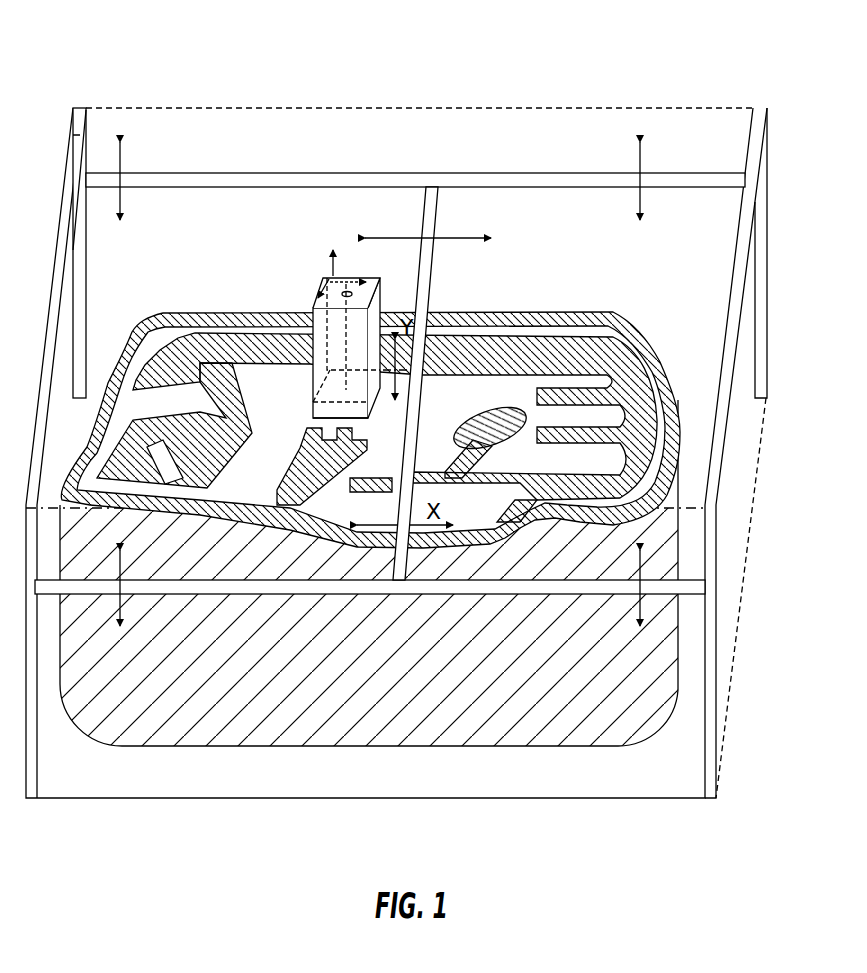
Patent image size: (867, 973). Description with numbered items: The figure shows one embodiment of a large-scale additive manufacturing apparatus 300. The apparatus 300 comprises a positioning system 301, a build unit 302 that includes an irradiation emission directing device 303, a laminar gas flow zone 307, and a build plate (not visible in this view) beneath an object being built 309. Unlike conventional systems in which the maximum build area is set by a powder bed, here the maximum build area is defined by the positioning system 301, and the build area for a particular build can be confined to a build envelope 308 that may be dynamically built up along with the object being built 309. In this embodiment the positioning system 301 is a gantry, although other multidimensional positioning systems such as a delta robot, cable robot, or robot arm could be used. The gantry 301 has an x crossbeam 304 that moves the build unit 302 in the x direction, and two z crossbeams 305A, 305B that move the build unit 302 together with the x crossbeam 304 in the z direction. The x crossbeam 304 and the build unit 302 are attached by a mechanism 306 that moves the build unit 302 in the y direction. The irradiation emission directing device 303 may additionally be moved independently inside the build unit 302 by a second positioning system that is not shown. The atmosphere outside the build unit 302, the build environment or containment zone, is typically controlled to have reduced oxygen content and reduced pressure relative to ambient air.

The large-scale additive manufacturing apparatus 300 is at (449, 96).
The positioning system 301 is at (78, 118).
The build unit 302 is at (325, 277).
The irradiation emission directing device 303 is at (353, 293).
The x crossbeam 304 is at (428, 280).
The z crossbeam 305A is at (210, 173).
The z crossbeam 305B is at (193, 594).
The mechanism 306 is at (392, 372).
The laminar gas flow zone 307 is at (337, 410).
The build envelope 308 is at (630, 326).
The object being built 309 is at (650, 405).